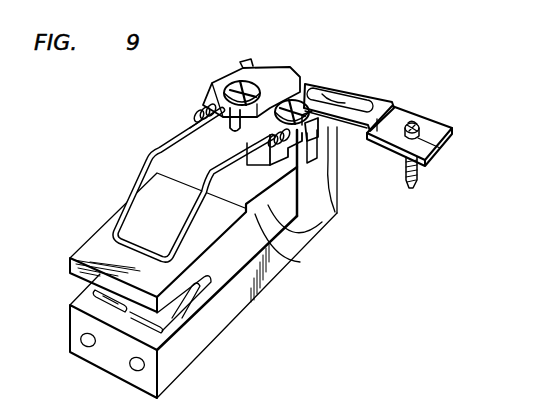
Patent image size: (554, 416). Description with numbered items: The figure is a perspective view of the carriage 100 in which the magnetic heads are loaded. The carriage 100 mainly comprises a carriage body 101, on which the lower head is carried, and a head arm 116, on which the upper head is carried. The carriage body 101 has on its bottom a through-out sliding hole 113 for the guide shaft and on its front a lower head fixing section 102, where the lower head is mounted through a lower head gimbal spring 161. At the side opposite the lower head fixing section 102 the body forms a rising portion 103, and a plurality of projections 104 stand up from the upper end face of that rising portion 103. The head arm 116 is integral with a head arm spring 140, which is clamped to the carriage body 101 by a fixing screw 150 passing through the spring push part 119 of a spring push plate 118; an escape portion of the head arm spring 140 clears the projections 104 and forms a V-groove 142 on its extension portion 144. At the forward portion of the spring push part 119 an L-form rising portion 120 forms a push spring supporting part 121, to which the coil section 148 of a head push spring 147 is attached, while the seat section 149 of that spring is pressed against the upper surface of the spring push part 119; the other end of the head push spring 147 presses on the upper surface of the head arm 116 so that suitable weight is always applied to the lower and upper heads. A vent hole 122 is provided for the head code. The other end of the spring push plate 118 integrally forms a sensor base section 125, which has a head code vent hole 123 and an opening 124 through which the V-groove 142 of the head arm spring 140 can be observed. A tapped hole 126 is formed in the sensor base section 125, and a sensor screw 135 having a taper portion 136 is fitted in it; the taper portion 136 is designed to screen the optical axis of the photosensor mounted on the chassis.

The carriage 100 is at (233, 307).
The carriage body 101 is at (268, 283).
The lower head fixing section 102 is at (190, 308).
The rising portion 103 is at (342, 172).
The projections 104 is at (338, 160).
The sliding hole 113 is at (80, 346).
The head arm 116 is at (127, 200).
The spring push plate 118 is at (350, 86).
The spring push part 119 is at (338, 211).
The L-form rising portion 120 is at (305, 228).
The push spring supporting part 121 is at (197, 113).
The vent hole 122 is at (228, 118).
The head code vent hole 123 is at (303, 80).
The opening 124 is at (409, 123).
The sensor base section 125 is at (450, 124).
The tapped hole 126 is at (440, 148).
The sensor screw 135 is at (420, 122).
The taper portion 136 is at (422, 183).
The head arm spring 140 is at (295, 250).
The V-groove 142 is at (243, 75).
The extension portion 144 is at (255, 67).
The head push spring 147 is at (157, 153).
The coil section 148 is at (200, 94).
The seat section 149 is at (345, 83).
The fixing screw 150 is at (277, 96).
The lower head gimbal spring 161 is at (133, 316).